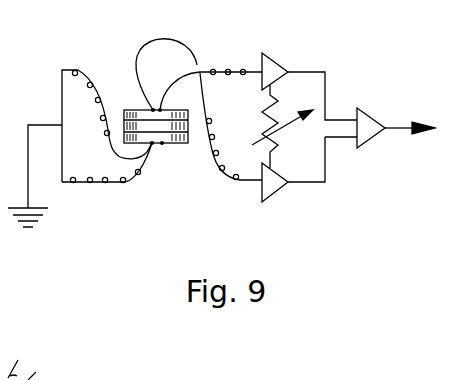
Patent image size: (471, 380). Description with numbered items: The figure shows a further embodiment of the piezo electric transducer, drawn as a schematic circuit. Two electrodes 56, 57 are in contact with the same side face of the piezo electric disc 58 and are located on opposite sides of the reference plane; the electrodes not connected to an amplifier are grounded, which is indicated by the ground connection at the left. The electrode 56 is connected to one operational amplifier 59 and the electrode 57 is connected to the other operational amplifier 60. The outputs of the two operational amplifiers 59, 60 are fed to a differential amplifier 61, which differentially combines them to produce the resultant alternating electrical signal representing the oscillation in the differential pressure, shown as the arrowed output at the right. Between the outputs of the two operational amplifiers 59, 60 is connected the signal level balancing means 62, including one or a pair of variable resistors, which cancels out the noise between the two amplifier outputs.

The electrode 56 is at (124, 110).
The electrode 57 is at (188, 117).
The piezo electric disc 58 is at (162, 143).
The operational amplifier 59 is at (278, 62).
The operational amplifier 60 is at (279, 191).
The differential amplifier 61 is at (378, 110).
The signal level balancing means 62 is at (287, 135).